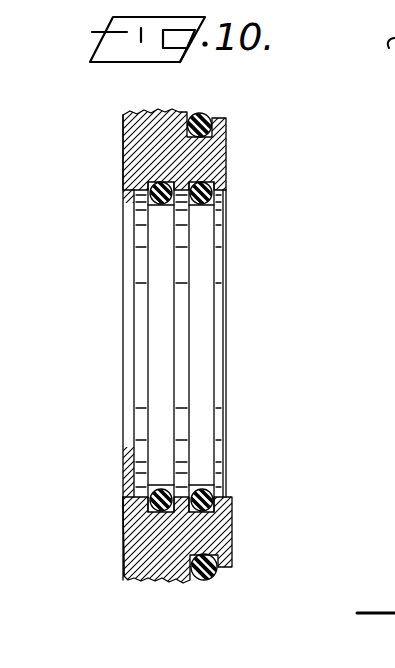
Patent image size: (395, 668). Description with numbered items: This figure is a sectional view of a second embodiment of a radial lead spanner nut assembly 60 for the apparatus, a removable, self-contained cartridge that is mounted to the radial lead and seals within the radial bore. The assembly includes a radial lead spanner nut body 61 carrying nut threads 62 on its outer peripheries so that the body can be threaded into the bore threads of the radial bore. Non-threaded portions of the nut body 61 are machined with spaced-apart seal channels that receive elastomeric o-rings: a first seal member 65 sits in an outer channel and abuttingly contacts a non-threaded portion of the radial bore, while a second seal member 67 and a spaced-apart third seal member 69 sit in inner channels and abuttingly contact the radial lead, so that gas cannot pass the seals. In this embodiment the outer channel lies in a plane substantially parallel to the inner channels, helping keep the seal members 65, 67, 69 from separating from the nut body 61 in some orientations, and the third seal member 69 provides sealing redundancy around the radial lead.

The radial lead spanner nut assembly 60 is at (253, 101).
The radial lead spanner nut body 61 is at (129, 550).
The nut threads 62 is at (147, 108).
The first seal member 65 is at (206, 114).
The second seal member 67 is at (213, 199).
The third seal member 69 is at (153, 199).